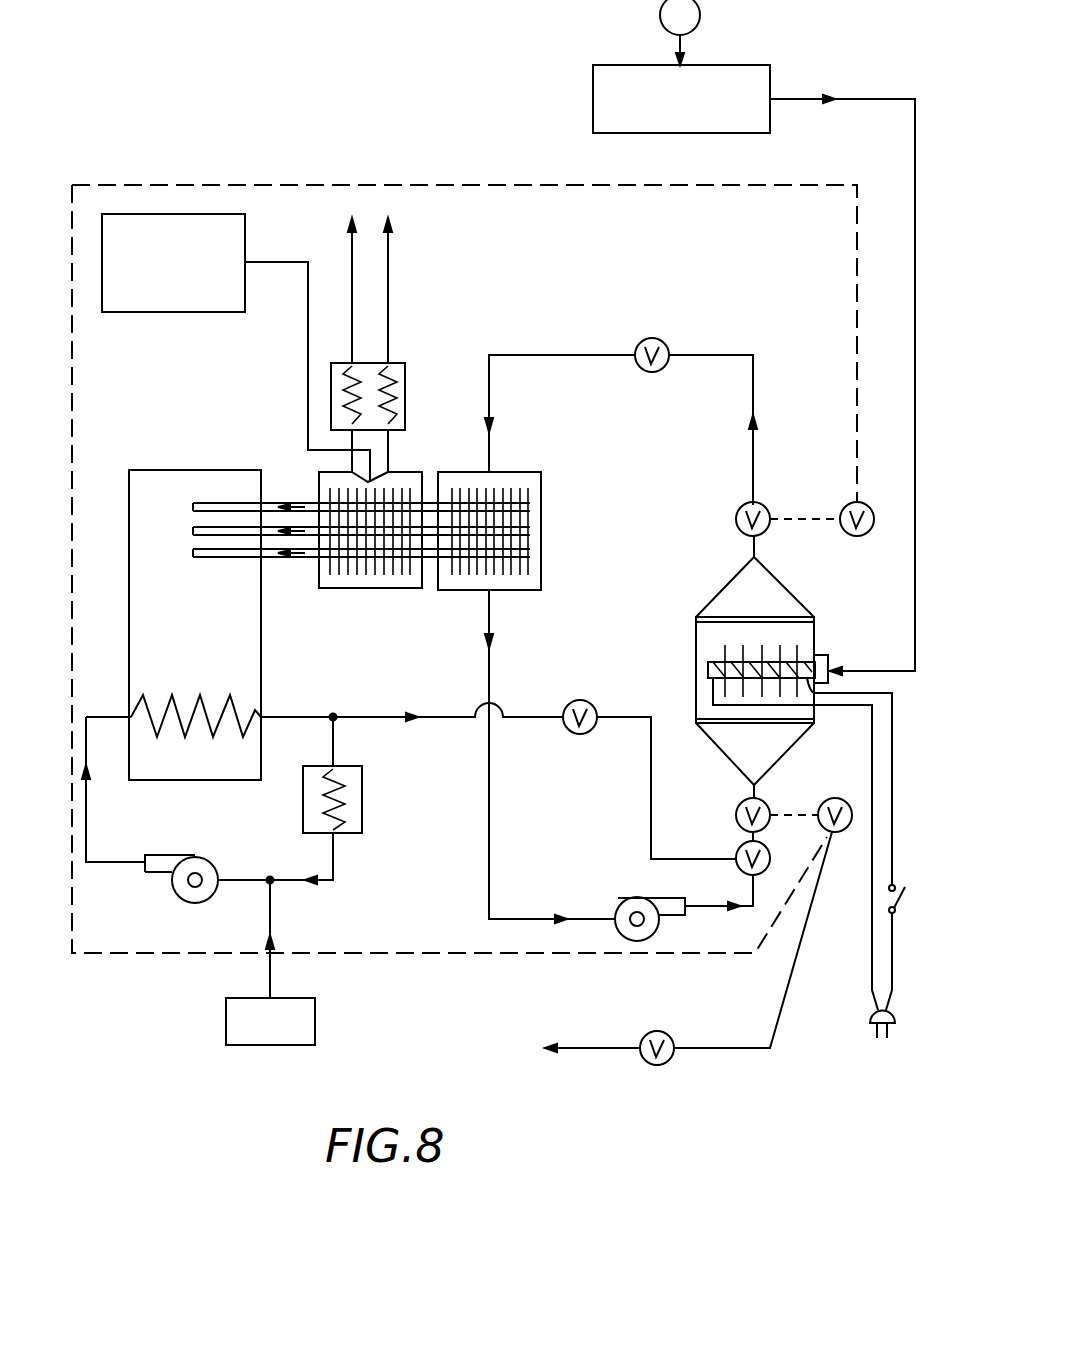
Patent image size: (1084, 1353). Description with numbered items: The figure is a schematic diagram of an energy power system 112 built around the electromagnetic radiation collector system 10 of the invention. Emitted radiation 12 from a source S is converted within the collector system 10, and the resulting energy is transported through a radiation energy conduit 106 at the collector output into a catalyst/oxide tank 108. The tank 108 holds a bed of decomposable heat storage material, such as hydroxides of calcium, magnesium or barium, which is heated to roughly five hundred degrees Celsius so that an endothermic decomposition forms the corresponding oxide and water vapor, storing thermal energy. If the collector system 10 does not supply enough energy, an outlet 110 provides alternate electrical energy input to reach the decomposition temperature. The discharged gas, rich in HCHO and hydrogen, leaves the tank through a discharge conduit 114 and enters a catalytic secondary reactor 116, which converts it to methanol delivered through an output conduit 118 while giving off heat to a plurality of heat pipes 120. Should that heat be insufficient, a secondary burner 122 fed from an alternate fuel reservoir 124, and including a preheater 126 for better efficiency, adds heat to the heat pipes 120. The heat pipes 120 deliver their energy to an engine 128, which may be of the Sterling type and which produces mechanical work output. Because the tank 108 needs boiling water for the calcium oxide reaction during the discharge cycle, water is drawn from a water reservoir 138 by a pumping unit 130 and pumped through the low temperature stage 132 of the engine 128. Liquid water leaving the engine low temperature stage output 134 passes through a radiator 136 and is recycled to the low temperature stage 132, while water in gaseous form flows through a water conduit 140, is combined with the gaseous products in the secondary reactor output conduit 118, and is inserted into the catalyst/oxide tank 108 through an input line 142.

The electromagnetic radiation collector system 10 is at (597, 70).
The emitted radiation 12 is at (688, 46).
The radiation energy conduit 106 is at (917, 112).
The catalyst/oxide tank 108 is at (782, 584).
The outlet 110 is at (877, 762).
The energy power system 112 is at (430, 868).
The discharge conduit 114 is at (703, 358).
The secondary reactor 116 is at (508, 472).
The output conduit 118 is at (490, 762).
The heat pipes 120 is at (313, 507).
The secondary burner 122 is at (398, 470).
The alternate fuel reservoir 124 is at (247, 226).
The preheater 126 is at (370, 362).
The engine 128 is at (185, 470).
The pumping unit 130 is at (178, 887).
The low temperature stage 132 is at (232, 697).
The engine low temperature stage output 134 is at (292, 714).
The radiator 136 is at (305, 800).
The water reservoir 138 is at (228, 1008).
The water conduit 140 is at (373, 714).
The input line 142 is at (763, 800).